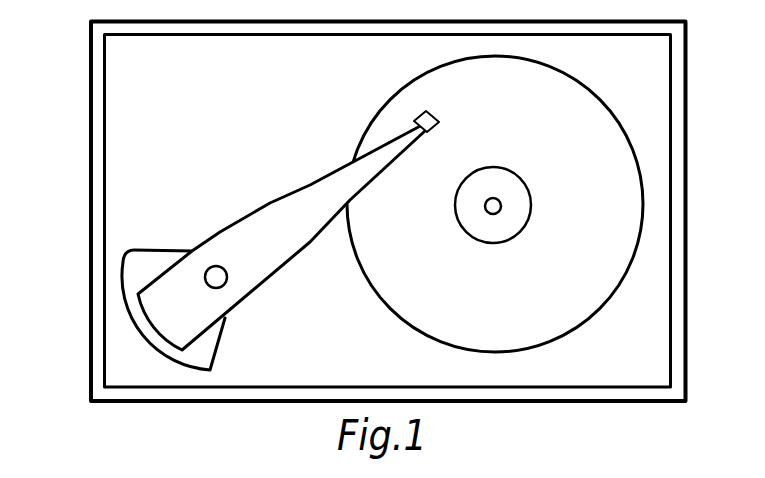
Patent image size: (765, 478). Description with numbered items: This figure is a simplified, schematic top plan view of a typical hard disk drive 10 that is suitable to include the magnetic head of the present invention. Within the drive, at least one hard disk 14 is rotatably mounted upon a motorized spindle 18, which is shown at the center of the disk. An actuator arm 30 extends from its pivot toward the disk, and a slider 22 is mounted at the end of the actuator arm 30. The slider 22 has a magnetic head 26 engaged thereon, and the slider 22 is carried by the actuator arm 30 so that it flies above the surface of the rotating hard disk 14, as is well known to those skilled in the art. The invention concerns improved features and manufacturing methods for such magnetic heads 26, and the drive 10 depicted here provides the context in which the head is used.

The hard disk drive 10 is at (90, 93).
The hard disk 14 is at (386, 305).
The motorized spindle 18 is at (523, 198).
The slider 22 is at (433, 128).
The magnetic head 26 is at (433, 118).
The actuator arm 30 is at (243, 221).